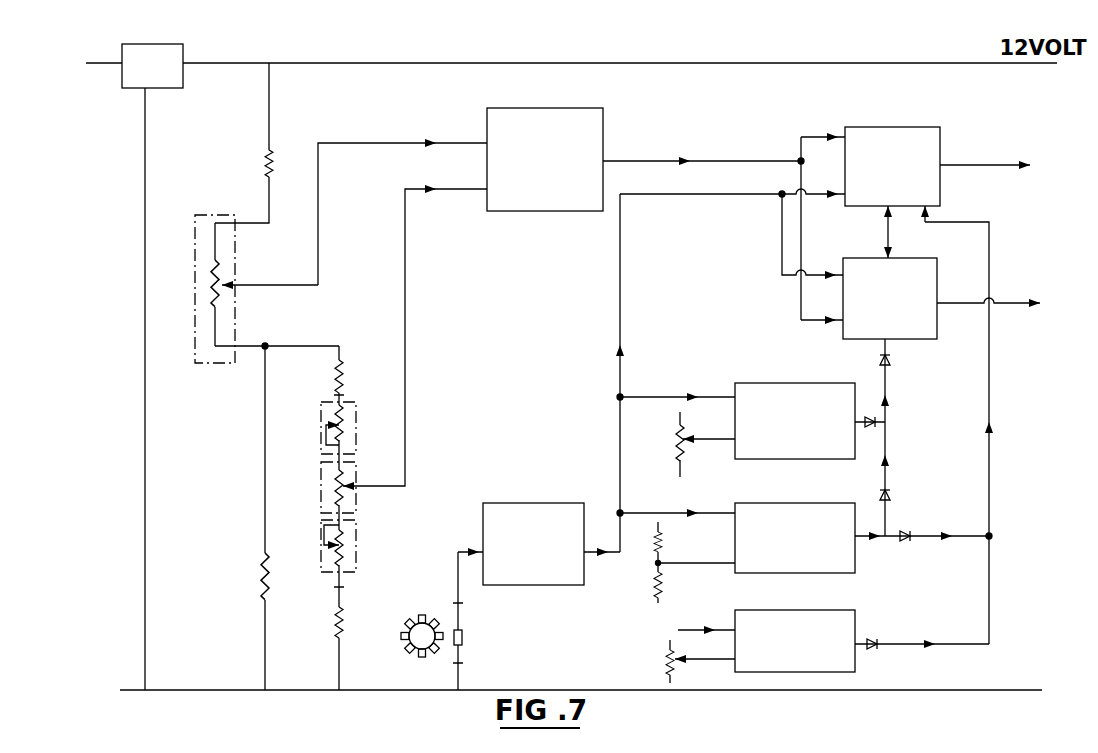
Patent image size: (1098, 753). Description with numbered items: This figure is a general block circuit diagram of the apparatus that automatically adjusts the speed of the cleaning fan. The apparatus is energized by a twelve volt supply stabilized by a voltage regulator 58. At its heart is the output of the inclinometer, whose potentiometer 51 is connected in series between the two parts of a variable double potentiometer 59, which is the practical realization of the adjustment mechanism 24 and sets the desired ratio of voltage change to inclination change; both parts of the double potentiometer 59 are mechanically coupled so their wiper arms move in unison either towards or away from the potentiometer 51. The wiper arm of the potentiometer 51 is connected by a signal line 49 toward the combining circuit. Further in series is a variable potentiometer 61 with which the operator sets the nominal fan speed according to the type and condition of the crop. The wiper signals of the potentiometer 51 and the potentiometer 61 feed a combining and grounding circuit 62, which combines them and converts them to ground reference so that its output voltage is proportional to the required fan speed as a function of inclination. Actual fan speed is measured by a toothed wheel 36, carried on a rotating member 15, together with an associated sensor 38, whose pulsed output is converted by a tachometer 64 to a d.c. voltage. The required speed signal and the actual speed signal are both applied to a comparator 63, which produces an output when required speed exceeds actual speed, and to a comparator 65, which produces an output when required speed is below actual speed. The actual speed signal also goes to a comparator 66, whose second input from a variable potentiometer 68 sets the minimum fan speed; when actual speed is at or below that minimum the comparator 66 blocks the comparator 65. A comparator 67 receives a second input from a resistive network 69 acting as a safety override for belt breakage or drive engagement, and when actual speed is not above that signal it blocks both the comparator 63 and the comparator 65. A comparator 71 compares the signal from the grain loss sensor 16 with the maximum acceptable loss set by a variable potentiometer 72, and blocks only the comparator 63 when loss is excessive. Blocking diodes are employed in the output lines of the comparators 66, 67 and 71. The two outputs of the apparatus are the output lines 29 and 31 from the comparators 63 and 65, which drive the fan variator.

The voltage regulator 58 is at (165, 81).
The variable potentiometer 61 is at (236, 300).
The adjustment mechanism 24 is at (269, 487).
The double potentiometer 59 is at (322, 524).
The potentiometer 51 is at (357, 502).
The signal line 49 is at (386, 486).
The toothed wheel 36 is at (418, 618).
The rotating member 15 is at (393, 633).
The sensor 38 is at (462, 637).
The tachometer 64 is at (546, 560).
The combining and grounding circuit 62 is at (558, 174).
The comparator 63 is at (905, 182).
The comparator 65 is at (903, 314).
The output line 29 is at (994, 165).
The output line 31 is at (1010, 303).
The comparator 66 is at (808, 436).
The variable potentiometer 68 is at (684, 456).
The comparator 67 is at (808, 553).
The resistive network 69 is at (664, 583).
The comparator 71 is at (808, 656).
The grain loss sensor 16 is at (653, 627).
The variable potentiometer 72 is at (676, 672).